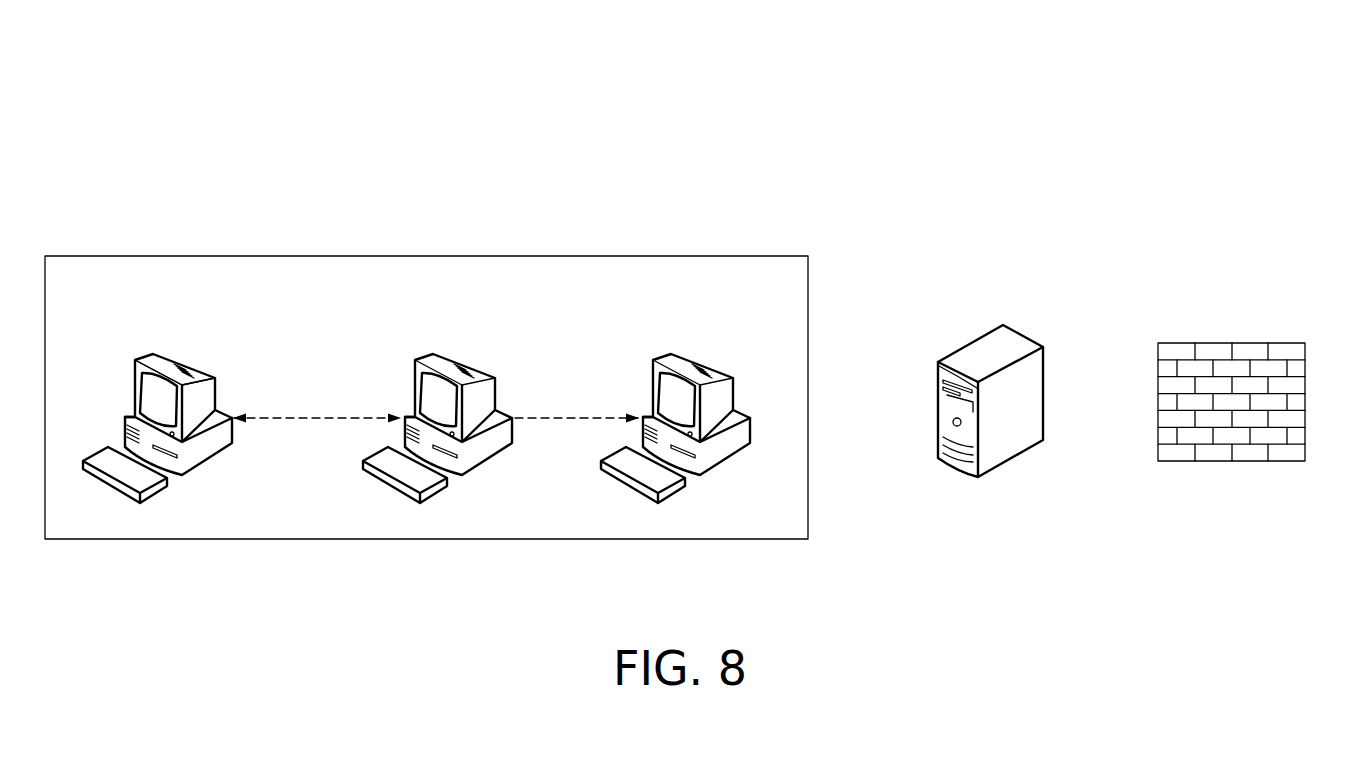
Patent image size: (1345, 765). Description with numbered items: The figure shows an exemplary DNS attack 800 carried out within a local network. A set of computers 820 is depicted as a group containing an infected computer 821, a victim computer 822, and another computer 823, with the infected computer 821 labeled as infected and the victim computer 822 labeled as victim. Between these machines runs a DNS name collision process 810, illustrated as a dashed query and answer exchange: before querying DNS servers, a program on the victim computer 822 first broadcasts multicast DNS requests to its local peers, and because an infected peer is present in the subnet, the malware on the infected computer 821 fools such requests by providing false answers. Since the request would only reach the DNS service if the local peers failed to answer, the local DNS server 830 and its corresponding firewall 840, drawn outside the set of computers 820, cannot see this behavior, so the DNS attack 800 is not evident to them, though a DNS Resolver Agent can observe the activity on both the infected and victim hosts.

The DNS attack 800 is at (1176, 84).
The DNS name collision process 810 is at (200, 400).
The set of computers 820 is at (208, 236).
The infected computer 821 is at (118, 380).
The victim computer 822 is at (392, 378).
The another computer 823 is at (636, 382).
The local DNS server 830 is at (1019, 325).
The firewall 840 is at (1234, 333).